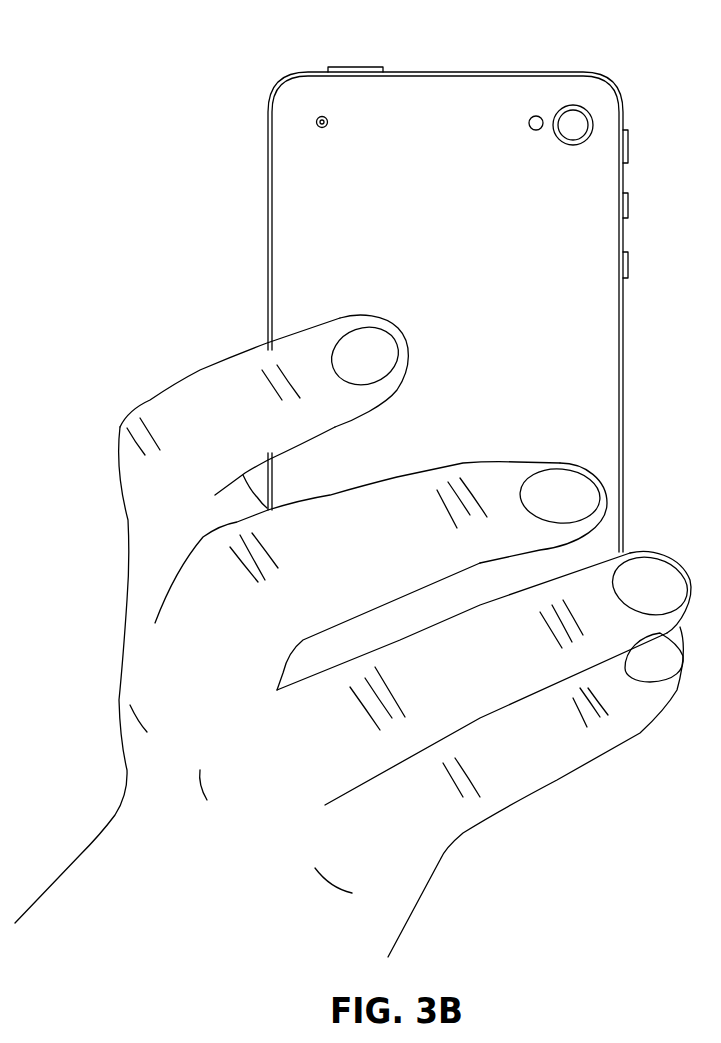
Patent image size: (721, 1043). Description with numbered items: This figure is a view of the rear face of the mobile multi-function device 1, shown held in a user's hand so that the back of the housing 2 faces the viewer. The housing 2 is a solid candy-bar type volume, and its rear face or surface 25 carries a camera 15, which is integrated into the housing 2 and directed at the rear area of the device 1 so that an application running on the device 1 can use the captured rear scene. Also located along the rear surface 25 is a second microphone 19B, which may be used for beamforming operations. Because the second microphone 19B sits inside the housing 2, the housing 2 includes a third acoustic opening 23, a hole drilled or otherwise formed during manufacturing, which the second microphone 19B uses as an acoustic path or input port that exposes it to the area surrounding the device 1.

The mobile multi-function device 1 is at (262, 70).
The housing 2 is at (433, 70).
The rear face or surface 25 is at (473, 95).
The camera 15 is at (590, 107).
The second microphone 19B is at (330, 118).
The third acoustic opening 23 is at (327, 130).